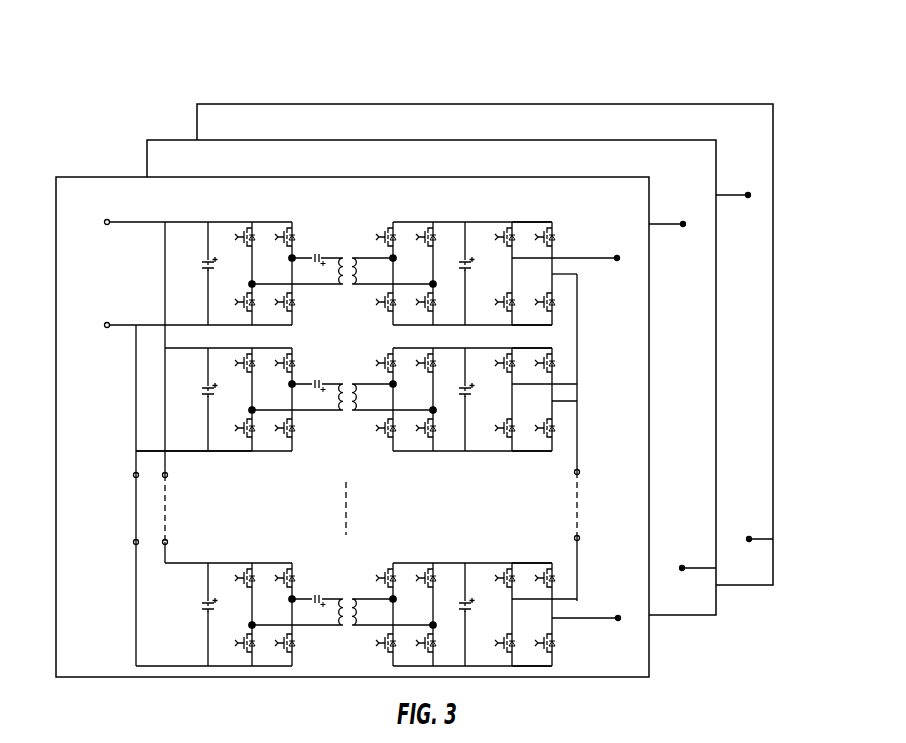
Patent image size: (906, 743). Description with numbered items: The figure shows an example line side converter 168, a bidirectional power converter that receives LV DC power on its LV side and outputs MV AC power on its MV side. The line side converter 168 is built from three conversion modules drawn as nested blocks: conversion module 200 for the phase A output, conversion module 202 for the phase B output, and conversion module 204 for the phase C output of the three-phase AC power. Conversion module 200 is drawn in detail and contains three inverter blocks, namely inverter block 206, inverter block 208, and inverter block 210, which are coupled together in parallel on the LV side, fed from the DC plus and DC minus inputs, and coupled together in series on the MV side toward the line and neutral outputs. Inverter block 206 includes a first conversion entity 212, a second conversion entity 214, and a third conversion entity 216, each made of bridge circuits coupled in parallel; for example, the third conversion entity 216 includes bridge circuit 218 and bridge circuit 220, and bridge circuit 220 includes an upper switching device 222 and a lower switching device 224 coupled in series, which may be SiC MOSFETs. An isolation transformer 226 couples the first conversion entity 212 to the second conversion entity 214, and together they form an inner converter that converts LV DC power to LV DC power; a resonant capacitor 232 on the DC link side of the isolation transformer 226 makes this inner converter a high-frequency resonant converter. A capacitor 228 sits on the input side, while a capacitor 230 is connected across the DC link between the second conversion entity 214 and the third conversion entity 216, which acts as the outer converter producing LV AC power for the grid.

The line side converter 168 is at (611, 73).
The conversion module 200 is at (54, 203).
The conversion module 202 is at (169, 138).
The conversion module 204 is at (218, 103).
The inverter block 206 is at (177, 218).
The inverter block 208 is at (192, 452).
The inverter block 210 is at (192, 563).
The first conversion entity 212 is at (237, 214).
The second conversion entity 214 is at (385, 214).
The third conversion entity 216 is at (500, 214).
The bridge circuit 218 is at (492, 260).
The bridge circuit 220 is at (556, 250).
The upper switching device 222 is at (556, 233).
The lower switching device 224 is at (556, 297).
The isolation transformer 226 is at (340, 287).
The capacitor 228 is at (205, 270).
The capacitor 230 is at (468, 270).
The resonant capacitor 232 is at (314, 254).